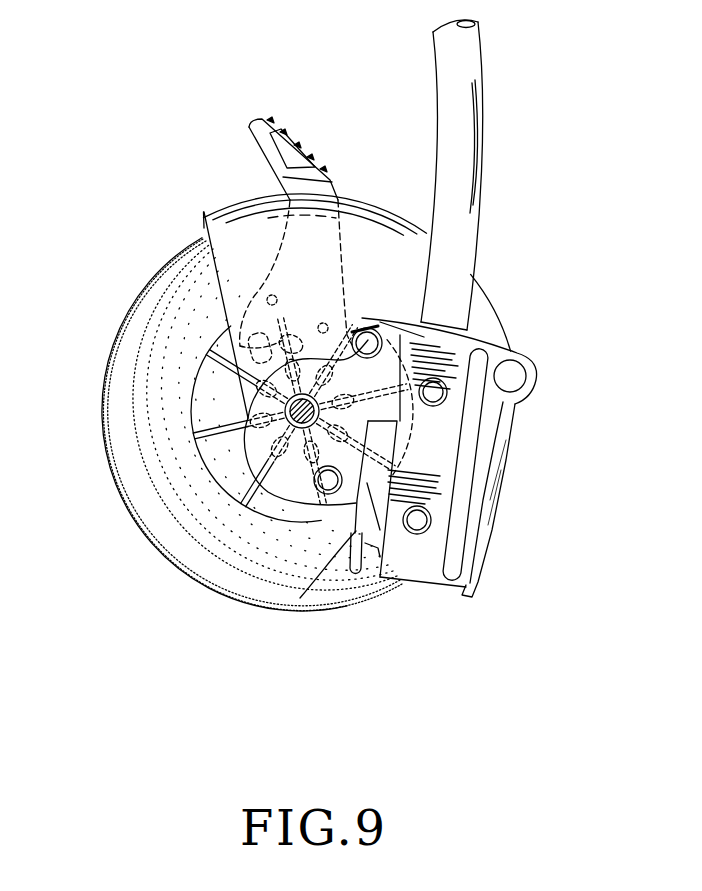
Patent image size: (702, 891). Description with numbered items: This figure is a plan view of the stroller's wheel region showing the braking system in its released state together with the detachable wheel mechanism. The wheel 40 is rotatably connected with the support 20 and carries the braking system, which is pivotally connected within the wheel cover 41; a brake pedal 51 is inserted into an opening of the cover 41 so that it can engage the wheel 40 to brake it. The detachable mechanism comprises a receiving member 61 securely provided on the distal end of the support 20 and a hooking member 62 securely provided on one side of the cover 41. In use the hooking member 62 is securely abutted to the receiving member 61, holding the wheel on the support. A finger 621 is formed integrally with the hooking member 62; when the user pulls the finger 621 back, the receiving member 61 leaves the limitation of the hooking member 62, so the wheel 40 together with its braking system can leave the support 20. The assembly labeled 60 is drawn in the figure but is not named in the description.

The support 20 is at (472, 118).
The wheel 40 is at (125, 476).
The wheel cover 41 is at (239, 208).
The brake pedal 51 is at (273, 126).
The mounting bracket 60 is at (528, 355).
The receiving member 61 is at (490, 413).
The hooking member 62 is at (307, 593).
The finger 621 is at (353, 575).